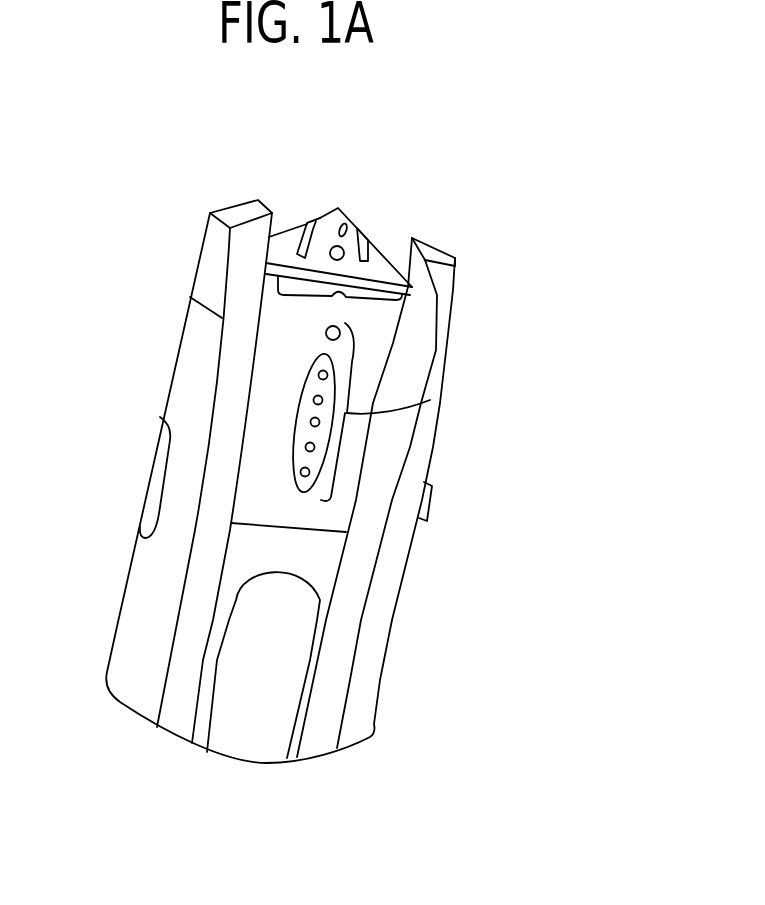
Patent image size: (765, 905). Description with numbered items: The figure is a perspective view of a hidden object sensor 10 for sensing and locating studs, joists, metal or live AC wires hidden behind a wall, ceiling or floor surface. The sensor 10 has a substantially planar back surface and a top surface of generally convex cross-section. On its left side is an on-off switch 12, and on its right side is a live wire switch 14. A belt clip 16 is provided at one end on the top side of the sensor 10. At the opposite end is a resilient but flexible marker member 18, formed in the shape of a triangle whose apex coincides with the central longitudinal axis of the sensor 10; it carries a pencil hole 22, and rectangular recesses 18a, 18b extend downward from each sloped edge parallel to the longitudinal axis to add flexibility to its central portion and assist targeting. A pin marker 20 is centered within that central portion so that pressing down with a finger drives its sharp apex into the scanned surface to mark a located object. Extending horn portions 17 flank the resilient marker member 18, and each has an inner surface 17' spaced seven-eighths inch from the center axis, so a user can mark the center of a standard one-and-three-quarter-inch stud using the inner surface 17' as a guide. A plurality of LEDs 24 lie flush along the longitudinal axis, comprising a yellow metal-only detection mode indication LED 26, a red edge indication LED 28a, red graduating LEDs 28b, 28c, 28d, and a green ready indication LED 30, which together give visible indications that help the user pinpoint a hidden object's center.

The hidden object sensor 10 is at (503, 201).
The on-off switch 12 is at (152, 472).
The live wire switch 14 is at (432, 502).
The belt clip 16 is at (267, 720).
The horn portion 17 is at (341, 451).
The inner surface 17' is at (412, 497).
The resilient marker member 18 is at (353, 233).
The rectangular recess 18a is at (302, 228).
The rectangular recess 18b is at (370, 243).
The pin marker 20 is at (345, 224).
The pencil hole 22 is at (333, 246).
The LEDs 24 is at (430, 400).
The metal-only detection mode indication LED 26 is at (326, 330).
The edge indication LED 28a is at (328, 374).
The graduating LED 28b is at (313, 399).
The graduating LED 28c is at (310, 422).
The graduating LED 28d is at (305, 447).
The ready indication LED 30 is at (300, 473).